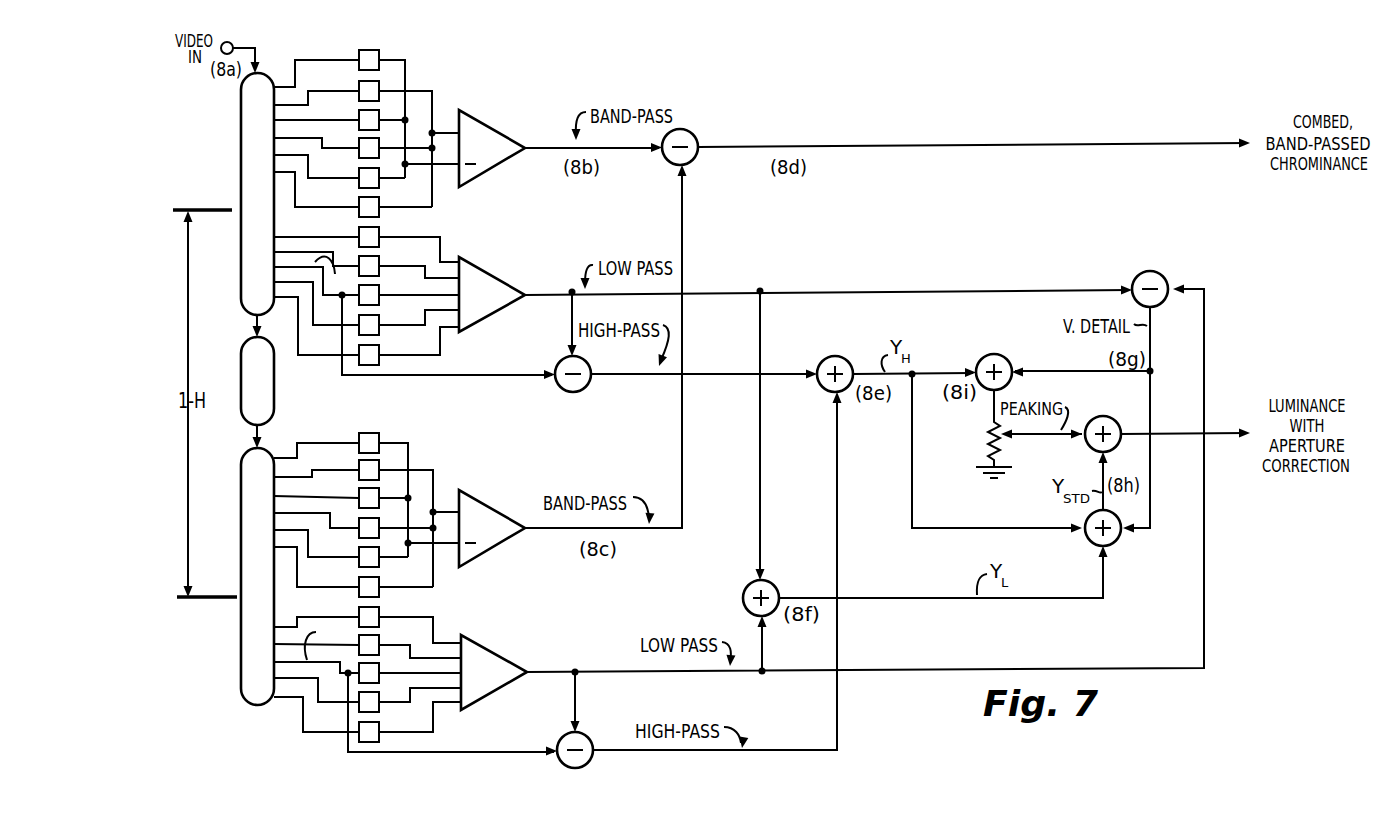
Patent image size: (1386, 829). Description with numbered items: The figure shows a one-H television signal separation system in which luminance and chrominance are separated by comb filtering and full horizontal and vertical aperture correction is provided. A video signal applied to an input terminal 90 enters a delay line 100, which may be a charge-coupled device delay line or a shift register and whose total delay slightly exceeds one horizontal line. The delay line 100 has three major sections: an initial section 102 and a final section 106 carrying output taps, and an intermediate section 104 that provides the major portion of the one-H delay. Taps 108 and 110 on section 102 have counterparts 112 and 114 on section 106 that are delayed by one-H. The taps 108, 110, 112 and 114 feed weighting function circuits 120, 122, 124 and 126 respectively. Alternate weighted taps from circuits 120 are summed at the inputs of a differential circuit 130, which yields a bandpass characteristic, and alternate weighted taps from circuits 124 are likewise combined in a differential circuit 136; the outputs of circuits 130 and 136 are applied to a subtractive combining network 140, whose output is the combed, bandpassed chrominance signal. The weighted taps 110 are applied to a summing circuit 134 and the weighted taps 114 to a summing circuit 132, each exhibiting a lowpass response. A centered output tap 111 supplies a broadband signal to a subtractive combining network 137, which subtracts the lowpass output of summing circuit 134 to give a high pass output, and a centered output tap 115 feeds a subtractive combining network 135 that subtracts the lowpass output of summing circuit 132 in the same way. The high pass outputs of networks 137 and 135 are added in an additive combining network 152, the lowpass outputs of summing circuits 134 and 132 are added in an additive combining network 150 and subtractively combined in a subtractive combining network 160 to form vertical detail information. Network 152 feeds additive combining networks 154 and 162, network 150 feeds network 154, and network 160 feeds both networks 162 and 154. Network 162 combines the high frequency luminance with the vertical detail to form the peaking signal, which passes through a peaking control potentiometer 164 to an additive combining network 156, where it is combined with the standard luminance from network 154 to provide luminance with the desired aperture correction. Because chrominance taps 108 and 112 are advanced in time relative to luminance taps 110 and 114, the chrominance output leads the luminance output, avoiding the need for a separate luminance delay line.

The input terminal 90 is at (229, 42).
The delay line 100 is at (230, 338).
The initial delay line section 102 is at (241, 117).
The intermediate delay line section 104 is at (276, 376).
The final delay line section 106 is at (242, 641).
The output taps 108 is at (283, 74).
The output taps 110 is at (303, 229).
The output tap 111 is at (332, 275).
The output taps 112 is at (285, 448).
The output taps 114 is at (290, 618).
The output tap 115 is at (324, 640).
The weighting function circuits 120 is at (365, 42).
The weighting function circuits 122 is at (392, 227).
The weighting function circuits 124 is at (369, 423).
The weighting function circuits 126 is at (395, 606).
The differential circuit 130 is at (492, 130).
The summing circuit 132 is at (488, 657).
The summing circuit 134 is at (502, 262).
The subtractive combining network 135 is at (564, 737).
The differential circuit 136 is at (490, 513).
The subtractive combining network 137 is at (562, 361).
The subtractive combining network 140 is at (690, 130).
The additive combining network 150 is at (748, 588).
The additive combining network 152 is at (822, 358).
The additive combining network 154 is at (1119, 543).
The additive combining network 156 is at (1106, 417).
The subtractive combining network 160 is at (1166, 262).
The additive combining network 162 is at (999, 356).
The peaking control potentiometer 164 is at (988, 430).